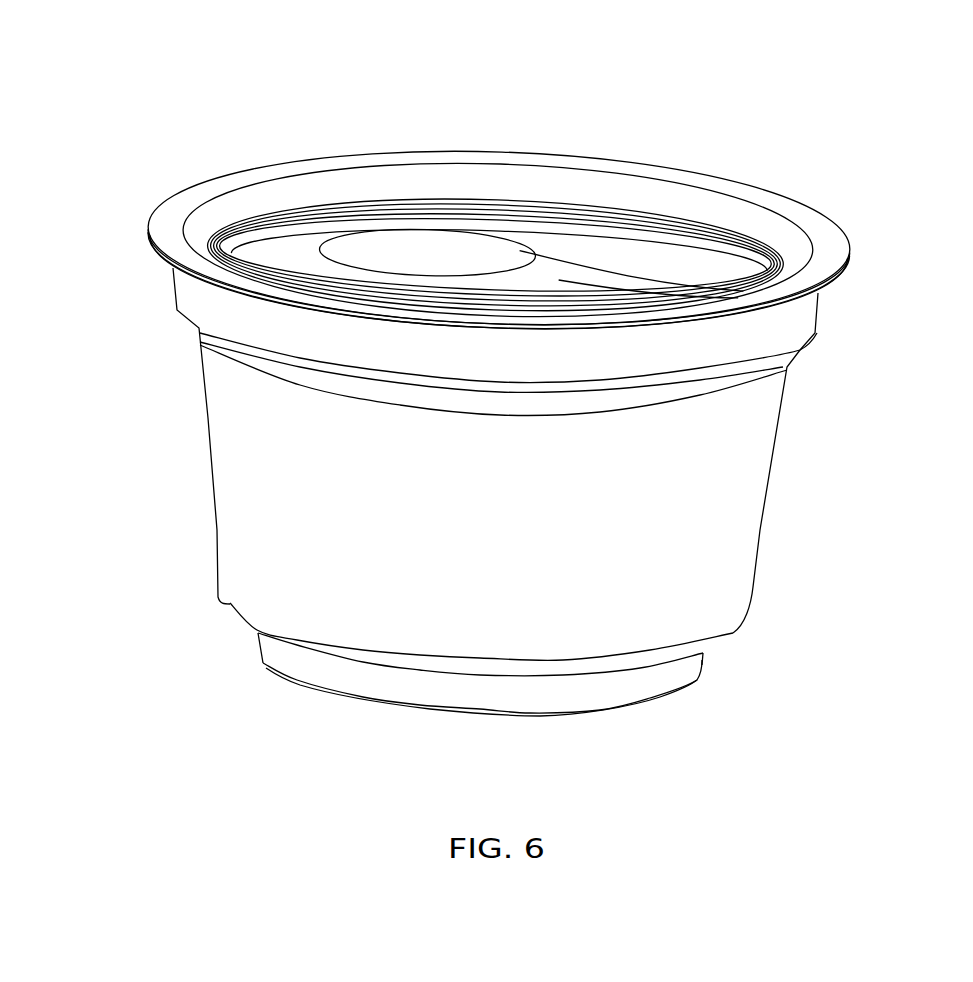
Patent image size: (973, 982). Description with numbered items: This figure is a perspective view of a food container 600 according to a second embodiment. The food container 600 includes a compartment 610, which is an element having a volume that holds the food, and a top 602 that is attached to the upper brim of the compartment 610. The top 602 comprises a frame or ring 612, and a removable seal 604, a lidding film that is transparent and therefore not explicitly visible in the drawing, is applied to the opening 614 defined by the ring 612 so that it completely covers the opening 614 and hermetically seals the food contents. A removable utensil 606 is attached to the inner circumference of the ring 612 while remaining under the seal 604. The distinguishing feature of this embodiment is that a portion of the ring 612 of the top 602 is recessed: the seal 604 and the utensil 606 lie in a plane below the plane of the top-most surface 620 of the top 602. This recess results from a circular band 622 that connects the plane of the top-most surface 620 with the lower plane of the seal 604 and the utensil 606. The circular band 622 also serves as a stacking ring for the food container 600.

The food container 600 is at (165, 131).
The top 602 is at (855, 262).
The seal 604 is at (567, 265).
The removable utensil 606 is at (380, 245).
The compartment 610 is at (755, 502).
The ring 612 is at (152, 242).
The opening 614 is at (303, 265).
The top-most surface 620 is at (827, 240).
The circular band 622 is at (727, 215).